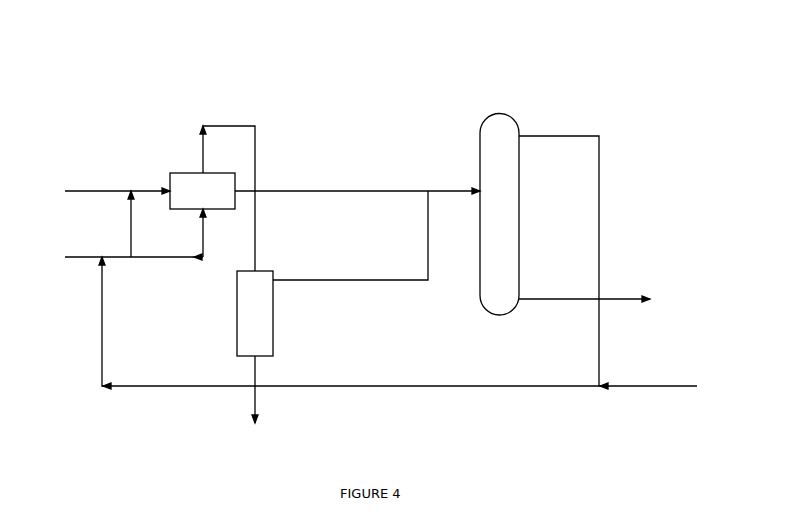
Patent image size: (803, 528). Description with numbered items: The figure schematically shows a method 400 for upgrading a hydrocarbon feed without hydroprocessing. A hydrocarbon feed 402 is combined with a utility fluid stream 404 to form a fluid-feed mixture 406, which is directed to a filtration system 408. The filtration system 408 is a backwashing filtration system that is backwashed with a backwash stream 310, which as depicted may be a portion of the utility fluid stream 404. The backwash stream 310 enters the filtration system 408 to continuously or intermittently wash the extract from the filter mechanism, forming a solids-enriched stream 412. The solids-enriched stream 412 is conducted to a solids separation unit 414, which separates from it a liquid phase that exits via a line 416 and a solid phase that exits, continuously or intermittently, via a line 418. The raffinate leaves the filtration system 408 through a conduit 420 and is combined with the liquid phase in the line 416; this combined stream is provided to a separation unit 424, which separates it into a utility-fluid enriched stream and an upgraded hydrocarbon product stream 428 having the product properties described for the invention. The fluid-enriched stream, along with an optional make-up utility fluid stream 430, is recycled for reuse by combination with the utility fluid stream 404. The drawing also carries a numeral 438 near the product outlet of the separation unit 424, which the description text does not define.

The method 400 is at (130, 52).
The hydrocarbon feed 402 is at (88, 190).
The utility fluid stream 404 is at (72, 258).
The fluid-feed mixture 406 is at (163, 193).
The filtration system 408 is at (202, 191).
The backwash stream 310 is at (208, 232).
The solids-enriched stream 412 is at (202, 153).
The solids separation unit 414 is at (255, 313).
The line 416 is at (336, 280).
The line 418 is at (258, 411).
The conduit 420 is at (335, 191).
The separation unit 424 is at (499, 215).
The upgraded hydrocarbon product stream 428 is at (528, 136).
The make-up utility fluid stream 430 is at (696, 385).
The product stream 438 is at (529, 299).